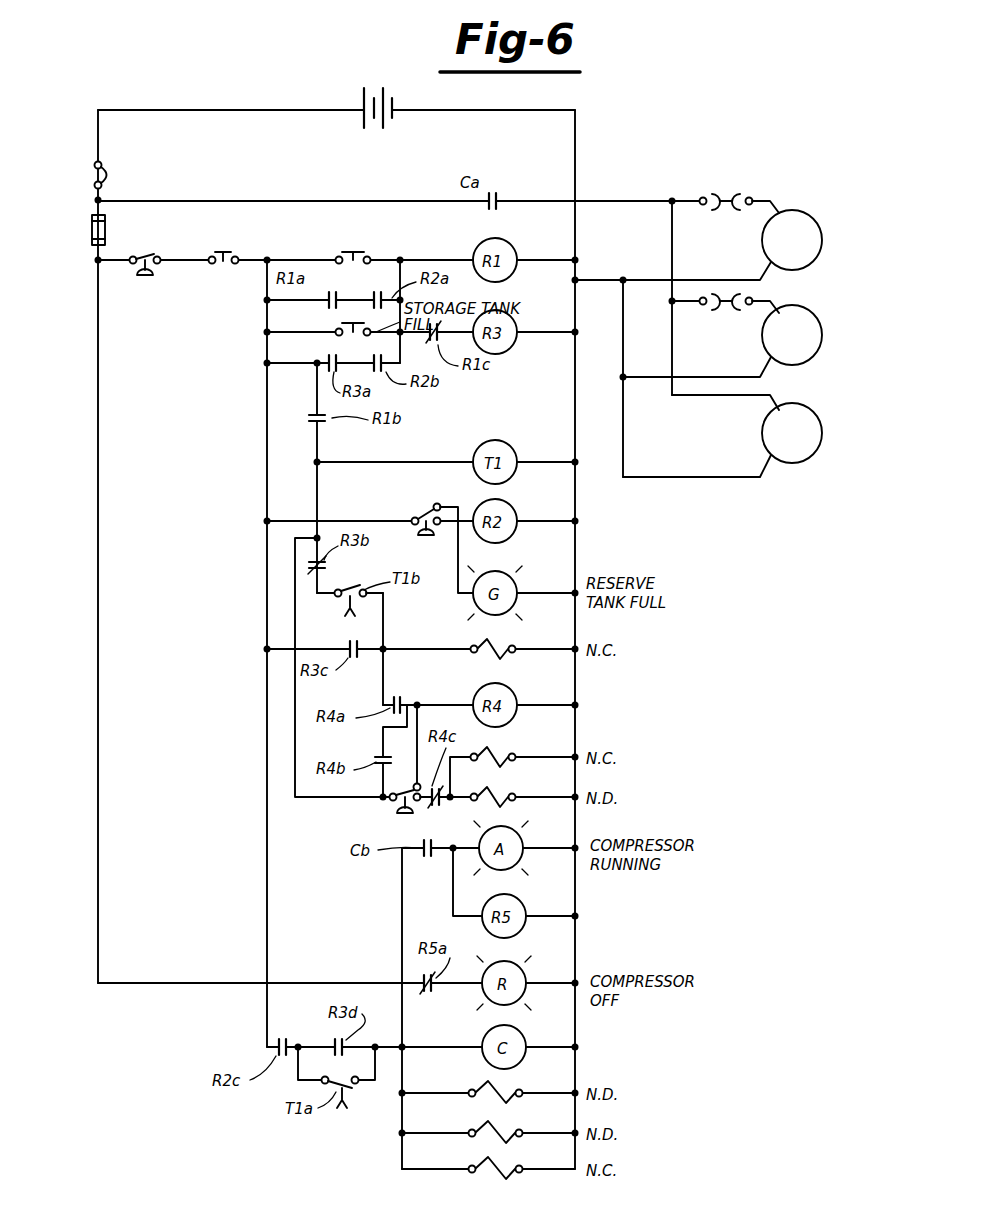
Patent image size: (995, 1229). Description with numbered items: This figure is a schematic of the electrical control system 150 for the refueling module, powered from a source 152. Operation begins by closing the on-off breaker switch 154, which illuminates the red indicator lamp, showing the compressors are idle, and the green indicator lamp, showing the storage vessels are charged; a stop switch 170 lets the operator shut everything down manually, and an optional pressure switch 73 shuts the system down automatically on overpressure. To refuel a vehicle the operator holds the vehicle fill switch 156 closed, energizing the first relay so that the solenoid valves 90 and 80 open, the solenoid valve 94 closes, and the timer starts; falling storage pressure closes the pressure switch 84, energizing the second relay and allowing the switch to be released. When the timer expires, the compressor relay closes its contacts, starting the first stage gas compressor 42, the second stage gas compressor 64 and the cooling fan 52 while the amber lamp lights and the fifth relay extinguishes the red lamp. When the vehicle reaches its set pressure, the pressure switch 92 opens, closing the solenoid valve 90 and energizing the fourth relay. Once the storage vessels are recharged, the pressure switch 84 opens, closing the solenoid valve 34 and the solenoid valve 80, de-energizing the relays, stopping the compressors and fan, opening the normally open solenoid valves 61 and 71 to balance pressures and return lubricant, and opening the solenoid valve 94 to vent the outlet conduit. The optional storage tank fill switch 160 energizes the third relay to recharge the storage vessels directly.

The battery / power source 152 is at (360, 96).
The control circuit 150 is at (620, 164).
The on-off breaker switch 154 is at (92, 240).
The pressure switch 73 is at (145, 278).
The stop switch 170 is at (226, 256).
The vehicle fill switch 156 is at (340, 250).
The storage tank fill switch 160 is at (336, 324).
The first stage gas compressor 42 is at (806, 252).
The second stage gas compressor 64 is at (806, 347).
The cooling fan 52 is at (806, 445).
The pressure switch 84 is at (425, 538).
The solenoid valve 80 is at (500, 648).
The solenoid valve 90 is at (500, 756).
The solenoid valve 94 is at (500, 796).
The pressure switch 92 is at (400, 814).
The solenoid valve 71 is at (480, 1088).
The solenoid valve 61 is at (480, 1128).
The solenoid valve 34 is at (480, 1164).